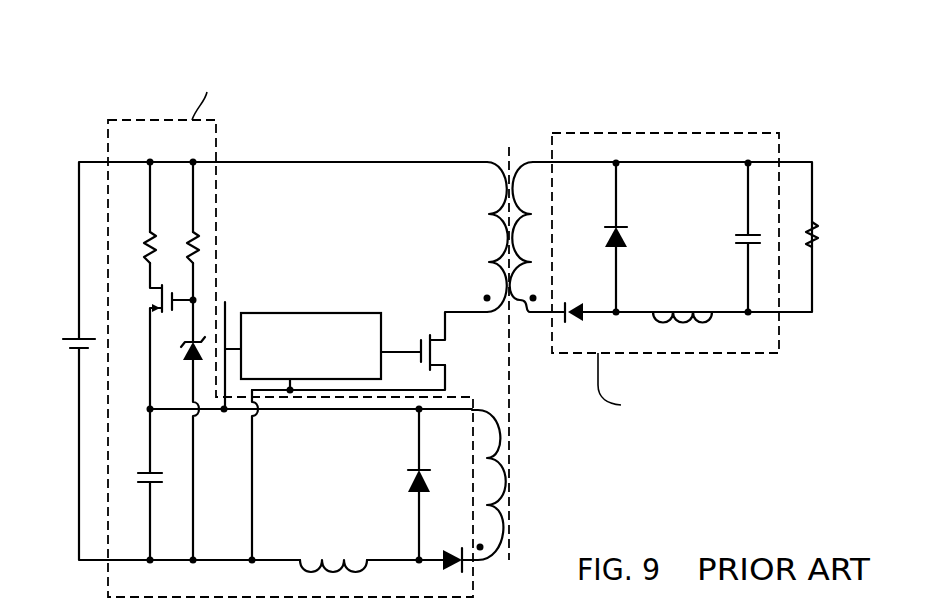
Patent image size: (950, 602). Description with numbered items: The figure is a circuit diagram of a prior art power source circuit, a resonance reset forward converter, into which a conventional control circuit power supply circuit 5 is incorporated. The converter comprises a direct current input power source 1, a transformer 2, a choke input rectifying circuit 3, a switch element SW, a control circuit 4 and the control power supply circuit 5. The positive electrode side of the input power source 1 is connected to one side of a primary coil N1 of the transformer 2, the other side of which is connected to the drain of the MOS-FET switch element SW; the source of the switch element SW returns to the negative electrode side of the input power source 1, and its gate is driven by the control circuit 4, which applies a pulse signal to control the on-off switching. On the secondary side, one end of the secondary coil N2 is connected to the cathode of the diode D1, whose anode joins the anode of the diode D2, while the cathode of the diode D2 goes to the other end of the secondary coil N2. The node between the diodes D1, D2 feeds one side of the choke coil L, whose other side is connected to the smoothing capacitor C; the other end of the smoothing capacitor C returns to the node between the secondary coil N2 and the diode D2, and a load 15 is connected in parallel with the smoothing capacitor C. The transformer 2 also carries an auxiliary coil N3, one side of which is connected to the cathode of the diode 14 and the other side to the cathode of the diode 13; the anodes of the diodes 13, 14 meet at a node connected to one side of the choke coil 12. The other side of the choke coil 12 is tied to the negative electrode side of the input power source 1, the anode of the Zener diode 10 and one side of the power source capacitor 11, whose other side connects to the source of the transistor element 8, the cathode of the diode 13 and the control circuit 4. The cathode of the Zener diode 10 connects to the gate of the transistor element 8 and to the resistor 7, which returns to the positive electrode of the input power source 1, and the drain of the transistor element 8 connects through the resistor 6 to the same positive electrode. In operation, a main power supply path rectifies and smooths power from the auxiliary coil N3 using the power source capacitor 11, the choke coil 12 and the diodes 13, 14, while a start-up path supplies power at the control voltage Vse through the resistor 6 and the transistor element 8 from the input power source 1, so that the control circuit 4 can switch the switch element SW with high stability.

The direct current input power source 1 is at (68, 335).
The transformer 2 is at (504, 335).
The choke input rectifying circuit 3 is at (660, 133).
The control circuit 4 is at (290, 313).
The control circuit power supply circuit 5 is at (218, 148).
The resistor 6 is at (150, 240).
The resistor 7 is at (193, 240).
The transistor element 8 is at (150, 310).
The Zener diode 10 is at (190, 362).
The power source capacitor 11 is at (150, 468).
The choke coil 12 is at (330, 558).
The diode 13 is at (405, 478).
The diode 14 is at (455, 568).
The load 15 is at (816, 246).
The primary coil N1 is at (505, 243).
The secondary coil N2 is at (520, 305).
The auxiliary coil N3 is at (505, 483).
The switch element SW is at (421, 330).
The diode D1 is at (578, 320).
The diode D2 is at (624, 237).
The smoothing capacitor C is at (740, 235).
The choke coil L is at (692, 312).
The control voltage Vse is at (244, 293).